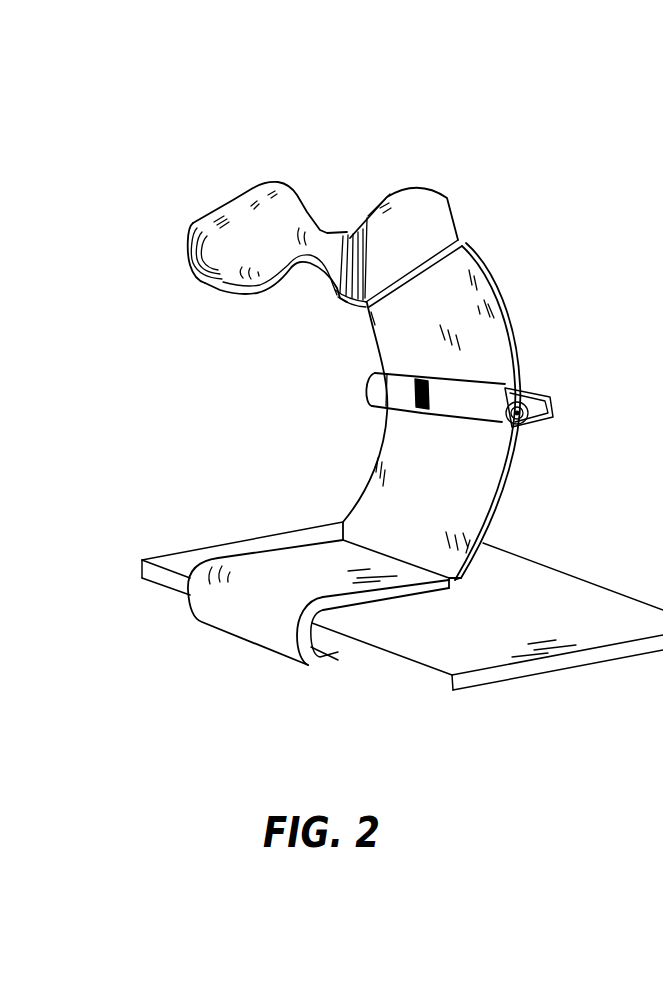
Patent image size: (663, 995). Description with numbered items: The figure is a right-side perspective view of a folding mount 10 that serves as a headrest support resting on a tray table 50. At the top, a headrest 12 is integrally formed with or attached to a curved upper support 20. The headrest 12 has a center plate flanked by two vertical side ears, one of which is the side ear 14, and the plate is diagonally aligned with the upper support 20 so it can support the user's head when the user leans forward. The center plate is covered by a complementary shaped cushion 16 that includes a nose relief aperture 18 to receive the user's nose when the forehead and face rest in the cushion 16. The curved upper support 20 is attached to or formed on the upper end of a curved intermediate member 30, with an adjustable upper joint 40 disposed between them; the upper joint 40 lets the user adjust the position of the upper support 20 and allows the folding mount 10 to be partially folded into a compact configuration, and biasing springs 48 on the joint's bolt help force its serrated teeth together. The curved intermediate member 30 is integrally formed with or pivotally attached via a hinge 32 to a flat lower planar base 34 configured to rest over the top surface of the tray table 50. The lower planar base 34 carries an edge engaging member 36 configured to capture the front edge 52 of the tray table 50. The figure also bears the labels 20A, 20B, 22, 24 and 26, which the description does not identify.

The folding mount 10 is at (241, 117).
The headrest 12 is at (332, 170).
The vertical side ear 14 is at (327, 230).
The cushion 16 is at (265, 181).
The nose relief aperture 18 is at (313, 288).
The curved upper support 20 is at (495, 268).
The outer edge of strap 20A is at (518, 311).
The inner edge of strap 20B is at (401, 340).
The pad 22 is at (223, 218).
The arm 24 is at (435, 205).
The gap 26 is at (404, 290).
The curved intermediate member 30 is at (510, 471).
The hinge 32 is at (455, 587).
The lower planar base 34 is at (184, 617).
The edge engaging member 36 is at (310, 668).
The upper joint 40 is at (367, 387).
The biasing springs 48 is at (553, 390).
The tray table 50 is at (287, 532).
The front edge 52 is at (413, 670).